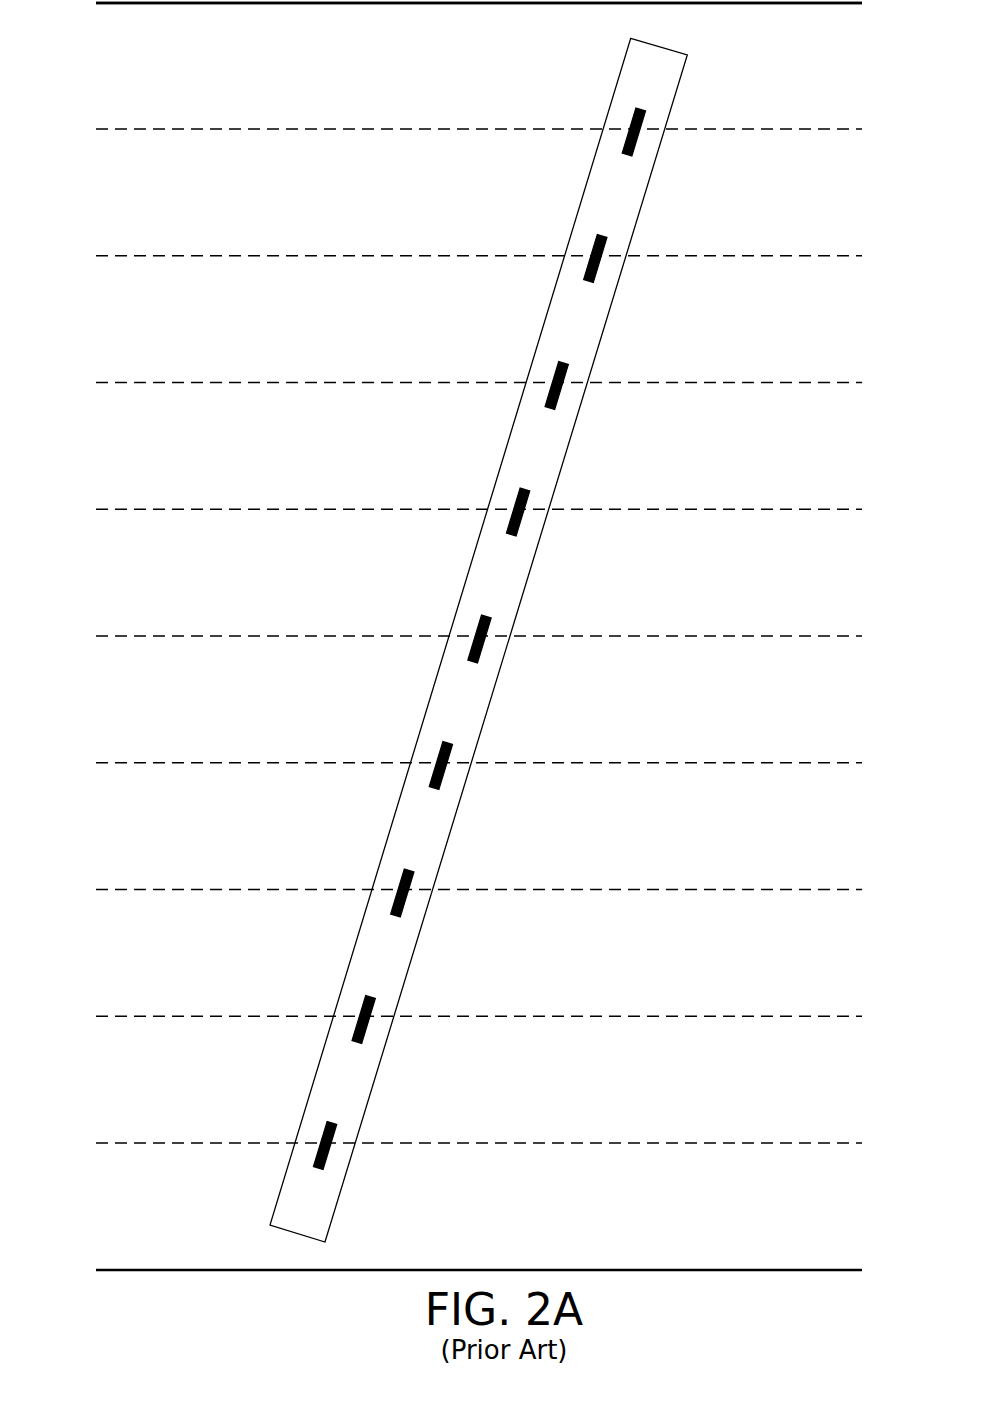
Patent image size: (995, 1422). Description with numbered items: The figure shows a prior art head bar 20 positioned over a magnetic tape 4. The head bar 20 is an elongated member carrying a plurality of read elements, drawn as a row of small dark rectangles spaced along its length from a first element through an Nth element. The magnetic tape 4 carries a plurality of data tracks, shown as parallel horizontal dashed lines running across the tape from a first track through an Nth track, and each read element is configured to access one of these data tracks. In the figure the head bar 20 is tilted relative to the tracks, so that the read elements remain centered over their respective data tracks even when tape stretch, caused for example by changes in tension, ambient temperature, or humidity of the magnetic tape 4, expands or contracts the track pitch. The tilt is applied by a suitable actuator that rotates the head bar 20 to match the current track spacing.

The magnetic tape 4 is at (80, 33).
The head bar 20 is at (608, 76).